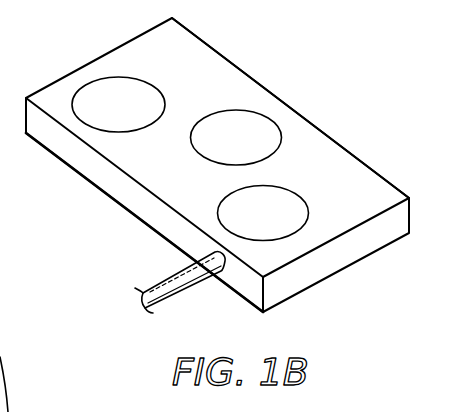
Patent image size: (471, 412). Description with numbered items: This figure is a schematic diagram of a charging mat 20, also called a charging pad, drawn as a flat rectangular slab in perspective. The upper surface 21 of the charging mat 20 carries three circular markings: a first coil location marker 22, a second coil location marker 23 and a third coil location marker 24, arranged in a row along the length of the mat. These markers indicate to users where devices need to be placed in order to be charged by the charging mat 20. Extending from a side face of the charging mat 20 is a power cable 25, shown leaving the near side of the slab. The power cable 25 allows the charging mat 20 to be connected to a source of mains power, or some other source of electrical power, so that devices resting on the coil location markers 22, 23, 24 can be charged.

The charging mat 20 is at (399, 256).
The upper surface 21 is at (325, 154).
The first coil location marker 22 is at (97, 78).
The second coil location marker 23 is at (256, 110).
The third coil location marker 24 is at (296, 236).
The power cable 25 is at (186, 291).